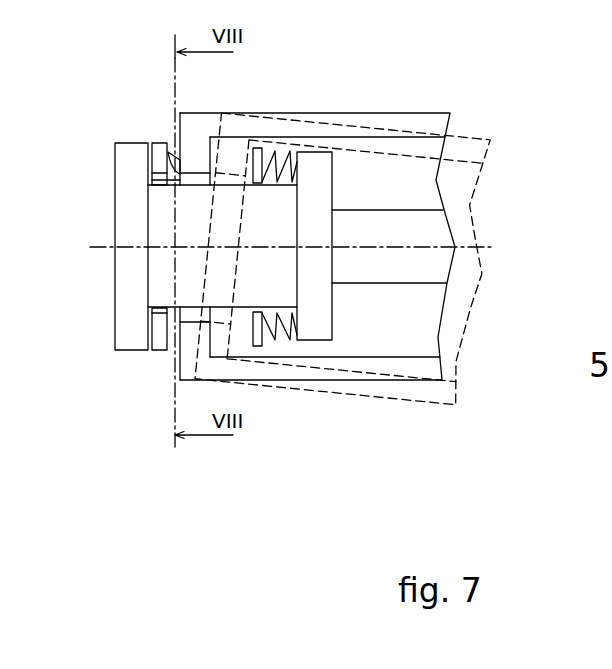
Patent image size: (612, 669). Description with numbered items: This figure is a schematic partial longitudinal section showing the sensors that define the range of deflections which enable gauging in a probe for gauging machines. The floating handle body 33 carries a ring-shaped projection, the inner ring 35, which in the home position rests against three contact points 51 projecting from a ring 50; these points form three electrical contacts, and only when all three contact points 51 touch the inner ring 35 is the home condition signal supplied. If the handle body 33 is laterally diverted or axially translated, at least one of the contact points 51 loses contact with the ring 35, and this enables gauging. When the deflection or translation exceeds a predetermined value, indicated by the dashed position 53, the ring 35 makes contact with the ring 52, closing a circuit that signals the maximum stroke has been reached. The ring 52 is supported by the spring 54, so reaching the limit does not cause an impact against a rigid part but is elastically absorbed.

The handle body 33 is at (432, 122).
The ring-shaped projection 35 is at (195, 133).
The ring 50 is at (150, 148).
The contact points 51 is at (174, 165).
The ring 52 is at (256, 333).
The position 53 is at (415, 395).
The spring 54 is at (283, 335).